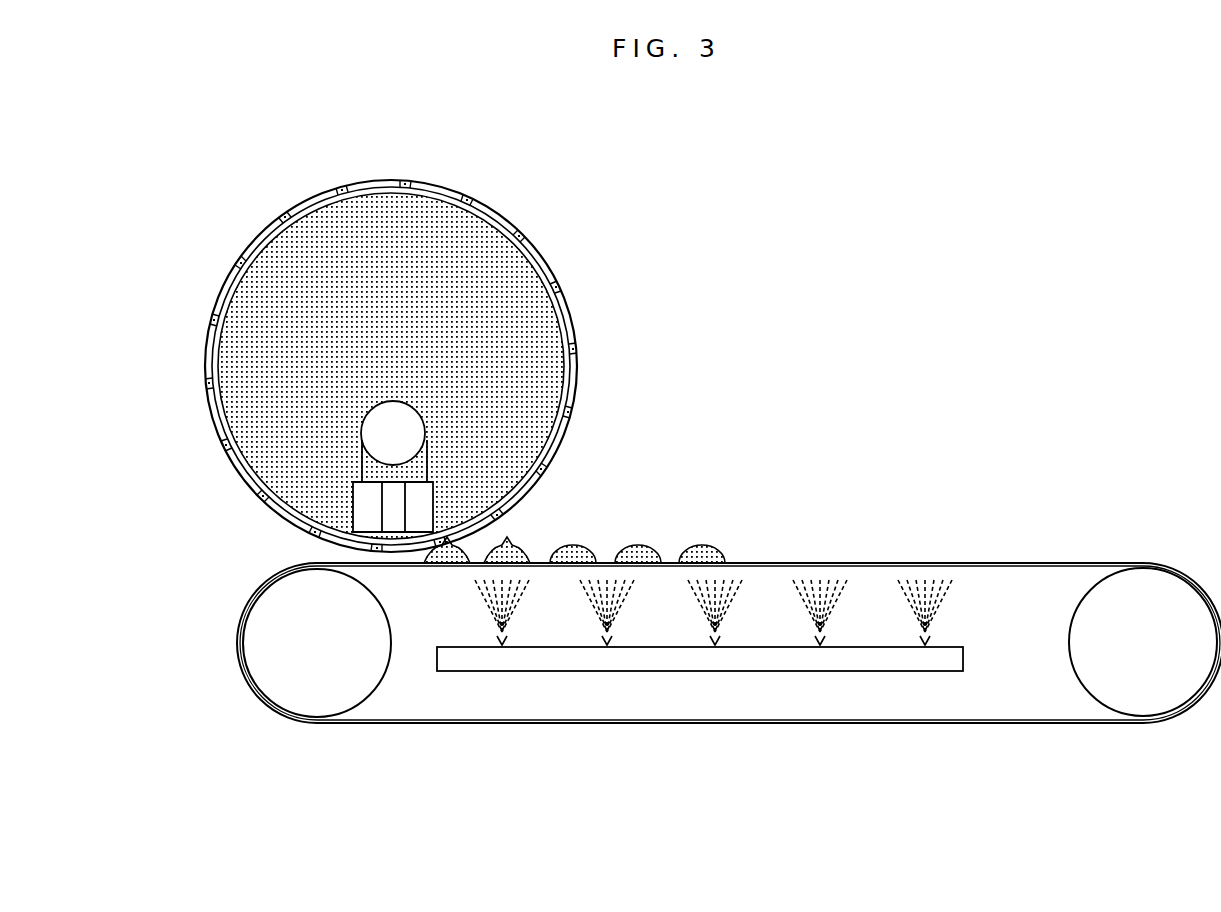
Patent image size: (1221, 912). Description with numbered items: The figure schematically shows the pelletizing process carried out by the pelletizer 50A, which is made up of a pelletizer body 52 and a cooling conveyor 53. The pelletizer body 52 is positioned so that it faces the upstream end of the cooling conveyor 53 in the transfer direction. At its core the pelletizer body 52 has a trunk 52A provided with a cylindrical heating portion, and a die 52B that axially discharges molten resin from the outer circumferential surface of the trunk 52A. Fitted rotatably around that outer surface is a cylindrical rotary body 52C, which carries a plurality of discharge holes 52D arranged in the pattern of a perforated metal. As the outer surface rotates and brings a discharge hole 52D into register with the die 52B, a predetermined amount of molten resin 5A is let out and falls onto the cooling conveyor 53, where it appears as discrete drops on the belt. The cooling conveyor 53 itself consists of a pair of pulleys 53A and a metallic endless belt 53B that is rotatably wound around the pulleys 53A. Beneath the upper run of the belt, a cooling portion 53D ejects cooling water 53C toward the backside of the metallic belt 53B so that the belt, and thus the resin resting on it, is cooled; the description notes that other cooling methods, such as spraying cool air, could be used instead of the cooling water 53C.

The pelletizer 50A is at (813, 320).
The pelletizer body 52 is at (437, 186).
The trunk 52A is at (473, 231).
The die 52B is at (355, 498).
The rotary body 52C is at (545, 257).
The discharge holes 52D is at (405, 181).
The molten resin 5A is at (562, 548).
The cooling conveyor 53 is at (1018, 561).
The pulleys 53A is at (308, 712).
The metallic belt 53B is at (729, 670).
The cooling water 53C is at (514, 618).
The cooling portion 53D is at (856, 672).